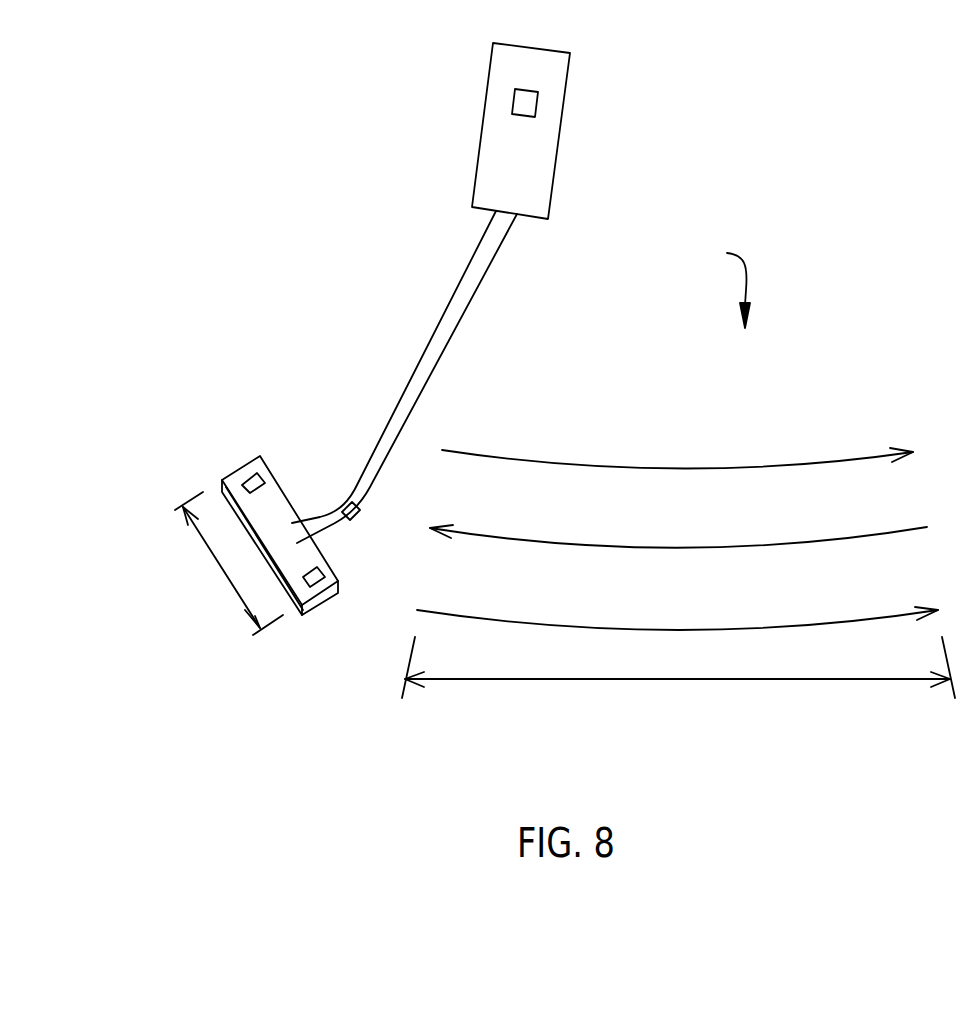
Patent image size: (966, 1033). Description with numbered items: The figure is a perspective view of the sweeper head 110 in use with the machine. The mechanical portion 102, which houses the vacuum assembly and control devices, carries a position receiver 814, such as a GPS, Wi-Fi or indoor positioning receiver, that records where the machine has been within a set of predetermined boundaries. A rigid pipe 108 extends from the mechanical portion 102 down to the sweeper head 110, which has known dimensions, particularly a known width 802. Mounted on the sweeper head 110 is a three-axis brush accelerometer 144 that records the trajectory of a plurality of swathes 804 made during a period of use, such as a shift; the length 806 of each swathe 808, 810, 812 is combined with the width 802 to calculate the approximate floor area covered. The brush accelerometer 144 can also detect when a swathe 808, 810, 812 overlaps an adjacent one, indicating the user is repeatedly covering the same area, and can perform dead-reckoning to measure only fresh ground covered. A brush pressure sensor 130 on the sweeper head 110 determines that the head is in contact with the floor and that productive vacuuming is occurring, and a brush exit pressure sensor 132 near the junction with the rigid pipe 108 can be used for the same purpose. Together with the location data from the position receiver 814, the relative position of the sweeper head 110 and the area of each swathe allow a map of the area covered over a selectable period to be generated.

The mechanical portion 102 is at (568, 82).
The position receiver 814 is at (527, 100).
The rigid pipe 108 is at (435, 328).
The sweeper head 110 is at (273, 477).
The brush accelerometer 144 is at (247, 483).
The brush pressure sensor 130 is at (325, 574).
The brush exit pressure sensor 132 is at (358, 513).
The width 802 is at (217, 562).
The plurality of swathes 804 is at (718, 284).
The length 806 is at (667, 680).
The swathe 808 is at (840, 621).
The swathe 810 is at (833, 538).
The swathe 812 is at (825, 460).